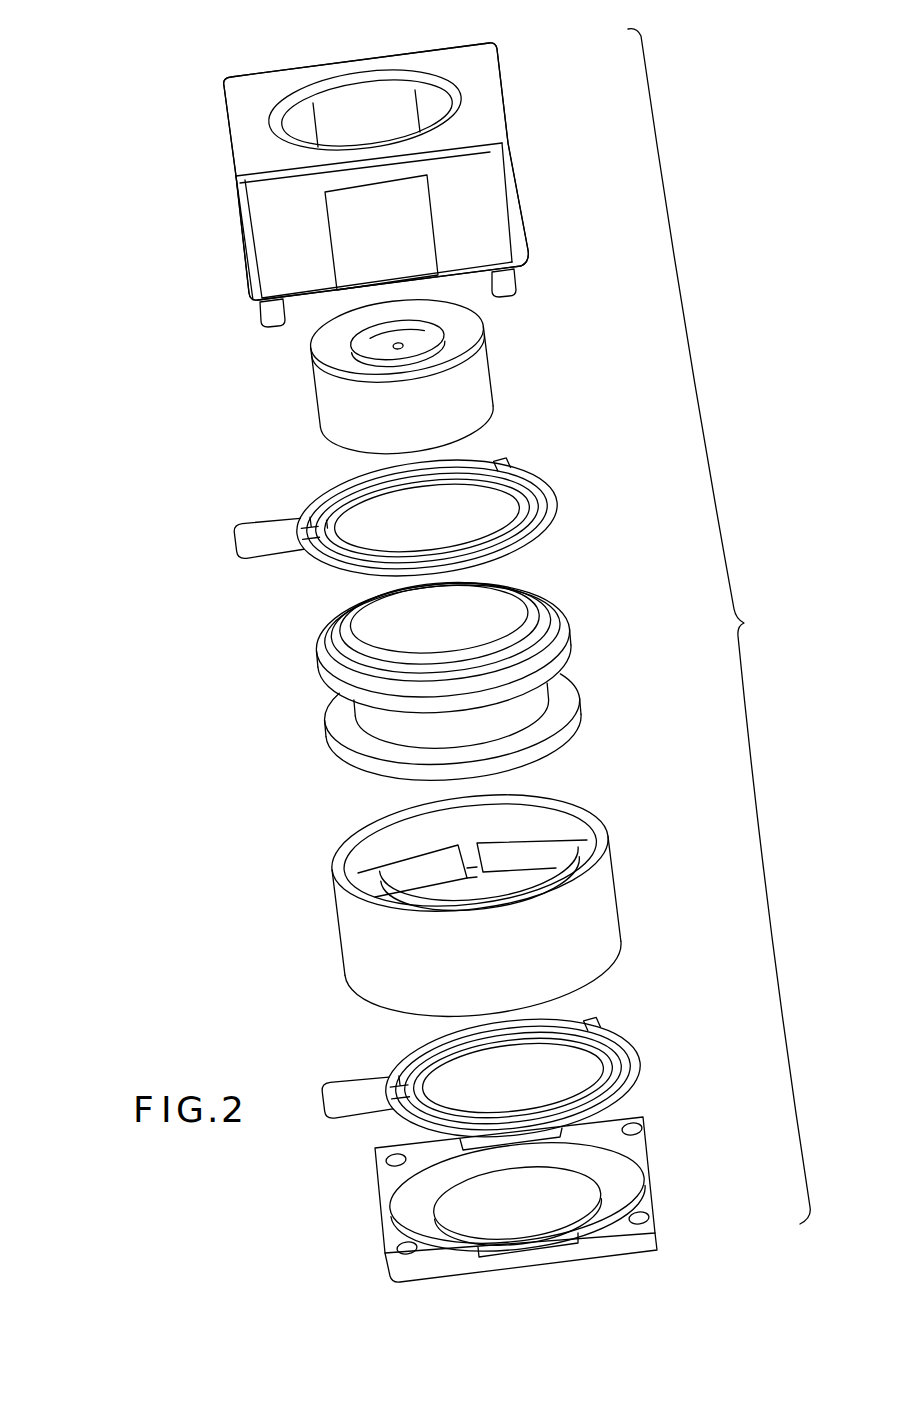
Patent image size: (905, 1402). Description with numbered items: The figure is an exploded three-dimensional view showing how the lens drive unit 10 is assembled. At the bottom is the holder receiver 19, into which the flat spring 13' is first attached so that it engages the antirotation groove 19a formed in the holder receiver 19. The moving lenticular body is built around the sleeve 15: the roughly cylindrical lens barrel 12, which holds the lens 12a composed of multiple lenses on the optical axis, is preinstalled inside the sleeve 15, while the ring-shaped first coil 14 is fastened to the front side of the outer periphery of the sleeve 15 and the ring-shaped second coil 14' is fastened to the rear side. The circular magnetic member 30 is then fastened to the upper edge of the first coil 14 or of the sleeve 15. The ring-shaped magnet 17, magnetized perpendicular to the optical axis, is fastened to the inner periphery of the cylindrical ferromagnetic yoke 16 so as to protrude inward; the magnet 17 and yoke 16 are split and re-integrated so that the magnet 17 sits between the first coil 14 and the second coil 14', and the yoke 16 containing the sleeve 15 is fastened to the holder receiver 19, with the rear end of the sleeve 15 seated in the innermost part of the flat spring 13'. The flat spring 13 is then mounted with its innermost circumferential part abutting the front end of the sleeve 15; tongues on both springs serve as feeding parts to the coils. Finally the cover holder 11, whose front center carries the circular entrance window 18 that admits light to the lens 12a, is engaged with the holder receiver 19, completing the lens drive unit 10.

The lens drive unit 10 is at (526, 152).
The cover holder 11 is at (488, 253).
The lens barrel 12 is at (477, 393).
The lens 12a is at (430, 333).
The flat spring 13 is at (440, 521).
The flat spring 13' is at (519, 1082).
The first coil 14 is at (485, 648).
The second coil 14' is at (495, 731).
The sleeve 15 is at (530, 702).
The yoke 16 is at (592, 918).
The magnet 17 is at (557, 853).
The entrance window 18 is at (378, 112).
The holder receiver 19 is at (645, 1130).
The antirotation groove 19a is at (652, 1187).
The magnetic member 30 is at (540, 620).